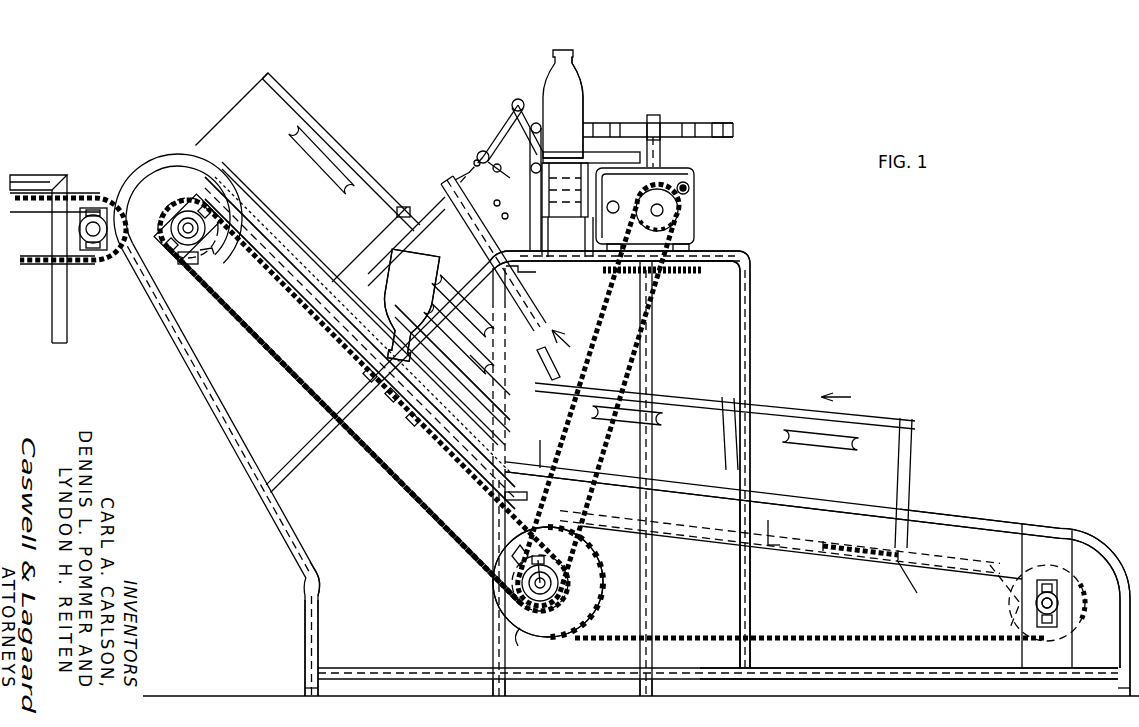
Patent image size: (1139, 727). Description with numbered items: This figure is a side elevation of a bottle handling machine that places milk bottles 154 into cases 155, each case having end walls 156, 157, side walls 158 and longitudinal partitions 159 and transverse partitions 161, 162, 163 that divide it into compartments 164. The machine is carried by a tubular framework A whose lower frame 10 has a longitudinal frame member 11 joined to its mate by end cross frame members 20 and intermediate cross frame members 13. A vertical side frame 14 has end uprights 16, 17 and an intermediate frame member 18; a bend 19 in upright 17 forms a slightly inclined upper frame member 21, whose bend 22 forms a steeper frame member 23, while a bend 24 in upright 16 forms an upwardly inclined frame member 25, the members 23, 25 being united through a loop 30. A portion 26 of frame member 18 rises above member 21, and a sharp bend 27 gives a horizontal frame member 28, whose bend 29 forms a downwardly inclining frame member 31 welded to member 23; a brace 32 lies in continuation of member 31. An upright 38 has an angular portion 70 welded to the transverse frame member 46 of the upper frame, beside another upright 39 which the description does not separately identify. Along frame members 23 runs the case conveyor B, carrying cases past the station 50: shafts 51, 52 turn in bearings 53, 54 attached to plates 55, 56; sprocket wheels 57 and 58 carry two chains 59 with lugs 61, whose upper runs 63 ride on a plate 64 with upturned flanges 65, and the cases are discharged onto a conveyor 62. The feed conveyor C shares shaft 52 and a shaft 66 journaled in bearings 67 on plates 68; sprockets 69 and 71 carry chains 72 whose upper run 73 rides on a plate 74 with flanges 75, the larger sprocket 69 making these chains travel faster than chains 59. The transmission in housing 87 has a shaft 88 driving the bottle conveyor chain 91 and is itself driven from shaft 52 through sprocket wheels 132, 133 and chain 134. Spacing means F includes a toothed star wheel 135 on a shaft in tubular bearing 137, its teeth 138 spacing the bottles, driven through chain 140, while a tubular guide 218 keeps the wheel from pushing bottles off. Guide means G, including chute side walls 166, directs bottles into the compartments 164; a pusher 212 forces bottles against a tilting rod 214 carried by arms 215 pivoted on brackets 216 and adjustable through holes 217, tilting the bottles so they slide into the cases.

The lower frame 10 is at (840, 672).
The longitudinal frame member 11 is at (950, 672).
The cross frame members 13 is at (503, 686).
The vertical side frame 14 is at (945, 514).
The end upright 16 is at (318, 632).
The end upright 17 is at (1120, 616).
The intermediate frame member 18 is at (750, 602).
The bend 19 is at (1095, 542).
The cross frame members 20 is at (305, 662).
The upper frame member 21 is at (838, 510).
The bend 22 is at (545, 464).
The frame member 23 is at (303, 243).
The bend 24 is at (320, 577).
The frame member 25 is at (218, 420).
The portion 26 is at (752, 332).
The sharp bend 27 is at (748, 256).
The horizontal frame member 28 is at (718, 266).
The bend 29 is at (502, 266).
The loop 30 is at (134, 170).
The frame member 31 is at (420, 348).
The brace 32 is at (318, 441).
The upright 38 is at (493, 640).
The post 39 is at (652, 573).
The transverse frame member 46 is at (546, 253).
The station 50 is at (410, 190).
The shaft 51 is at (188, 220).
The shaft 52 is at (548, 584).
The bearings 53 is at (196, 264).
The bearings 54 is at (556, 560).
The plates 55 is at (222, 190).
The plates 56 is at (515, 497).
The sprocket wheels 57 is at (210, 252).
The sprocket wheels 58 is at (517, 562).
The chains 59 is at (373, 462).
The lugs 61 is at (328, 290).
The conveyor 62 is at (40, 200).
The upper runs 63 is at (413, 423).
The plate 64 is at (366, 375).
The flanges 65 is at (300, 283).
The shaft 66 is at (1032, 598).
The bearings 67 is at (1052, 600).
The plates 68 is at (392, 397).
The sprockets 69 is at (592, 612).
The angular portion 70 is at (520, 270).
The sprockets 71 is at (1013, 607).
The chains 72 is at (877, 545).
The upper run 73 is at (843, 556).
The plate 74 is at (883, 560).
The flanges 75 is at (770, 534).
The housing 87 is at (690, 200).
The shaft 88 is at (662, 215).
The chain 91 is at (576, 205).
The sprocket wheel 132 is at (664, 212).
The sprocket wheel 133 is at (562, 574).
The chain 134 is at (600, 342).
The toothed star wheel 135 is at (700, 128).
The tubular bearing 137 is at (661, 156).
The teeth 138 is at (653, 123).
The chain 140 is at (668, 275).
The milk bottles 154 is at (572, 66).
The cases 155 is at (355, 150).
The end wall 156 is at (388, 250).
The end wall 157 is at (550, 365).
The side walls 158 is at (888, 450).
The longitudinal partitions 159 is at (444, 351).
The transverse partition 161 is at (410, 300).
The transverse partition 162 is at (440, 338).
The transverse partition 163 is at (485, 365).
The compartments 164 is at (337, 322).
The side walls 166 is at (480, 170).
The pusher 212 is at (546, 140).
The tilting rod 214 is at (518, 99).
The arms 215 is at (512, 115).
The brackets 216 is at (470, 171).
The holes 217 is at (485, 150).
The guide 218 is at (536, 123).
The framework A is at (1015, 523).
The conveyor B is at (255, 336).
The feed conveyor C is at (907, 586).
The spacing means F is at (735, 128).
The guide means G is at (475, 160).